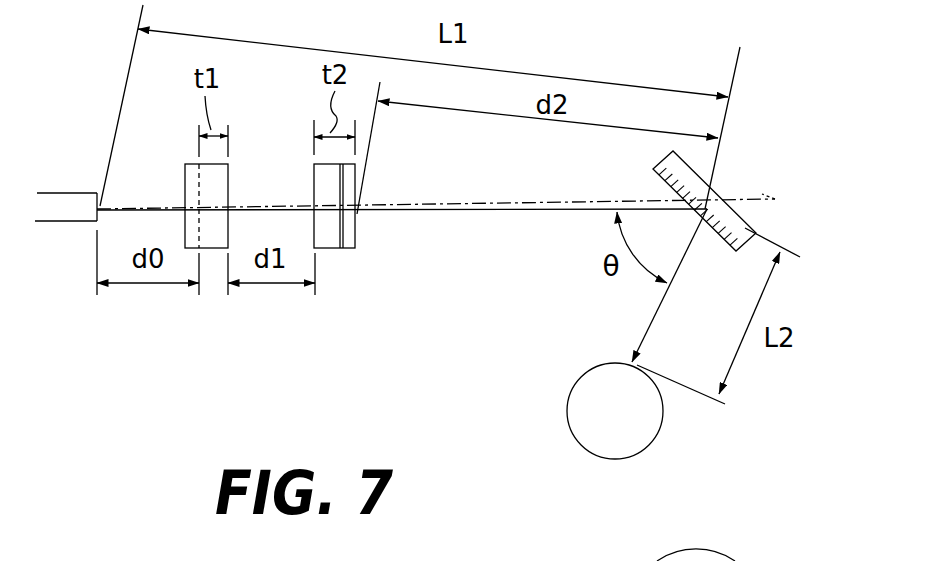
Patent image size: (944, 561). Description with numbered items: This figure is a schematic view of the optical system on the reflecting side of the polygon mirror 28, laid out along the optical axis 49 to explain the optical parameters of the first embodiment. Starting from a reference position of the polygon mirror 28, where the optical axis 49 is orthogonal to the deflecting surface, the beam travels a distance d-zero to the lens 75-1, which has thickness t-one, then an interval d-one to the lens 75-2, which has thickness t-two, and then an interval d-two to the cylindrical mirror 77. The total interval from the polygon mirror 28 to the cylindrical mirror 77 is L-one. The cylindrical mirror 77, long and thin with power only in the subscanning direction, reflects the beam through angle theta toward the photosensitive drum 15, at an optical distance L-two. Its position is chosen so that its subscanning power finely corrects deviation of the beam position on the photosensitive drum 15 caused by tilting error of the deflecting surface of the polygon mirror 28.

The polygon mirror 28 is at (75, 213).
The lens 75-1 is at (185, 181).
The lens 75-2 is at (314, 180).
The cylindrical mirror 77 is at (742, 211).
The optical axis 49 is at (761, 196).
The photosensitive drum 15 is at (580, 402).